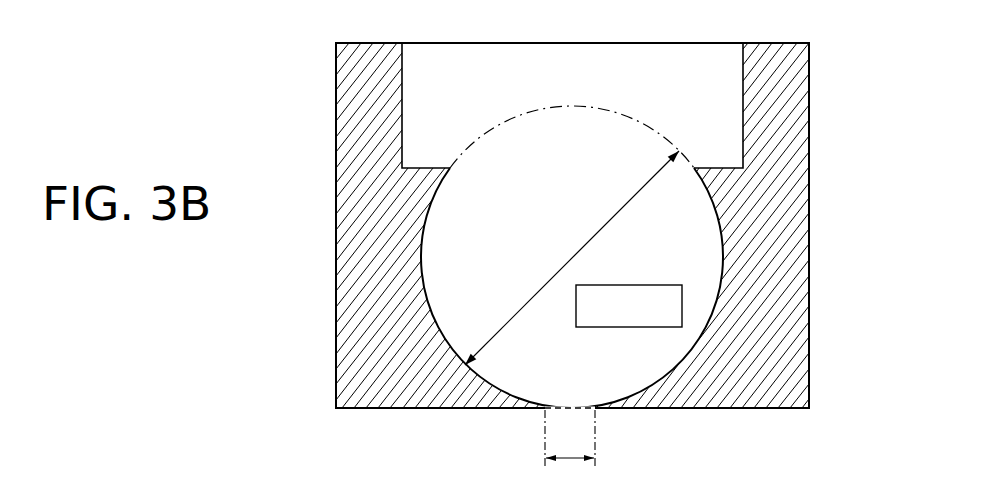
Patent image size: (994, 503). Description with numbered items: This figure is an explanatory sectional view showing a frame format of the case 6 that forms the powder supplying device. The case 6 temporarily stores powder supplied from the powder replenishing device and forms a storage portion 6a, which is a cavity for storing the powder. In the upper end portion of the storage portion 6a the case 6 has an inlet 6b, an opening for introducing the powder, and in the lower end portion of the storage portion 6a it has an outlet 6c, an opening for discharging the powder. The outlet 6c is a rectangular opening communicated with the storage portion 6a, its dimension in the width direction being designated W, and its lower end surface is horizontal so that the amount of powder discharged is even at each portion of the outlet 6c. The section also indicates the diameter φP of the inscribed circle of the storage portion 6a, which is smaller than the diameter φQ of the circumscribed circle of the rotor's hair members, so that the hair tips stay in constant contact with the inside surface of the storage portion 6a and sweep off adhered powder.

The case 6 is at (824, 153).
The storage portion 6a is at (420, 286).
The inlet 6b is at (405, 61).
The outlet 6c is at (592, 408).